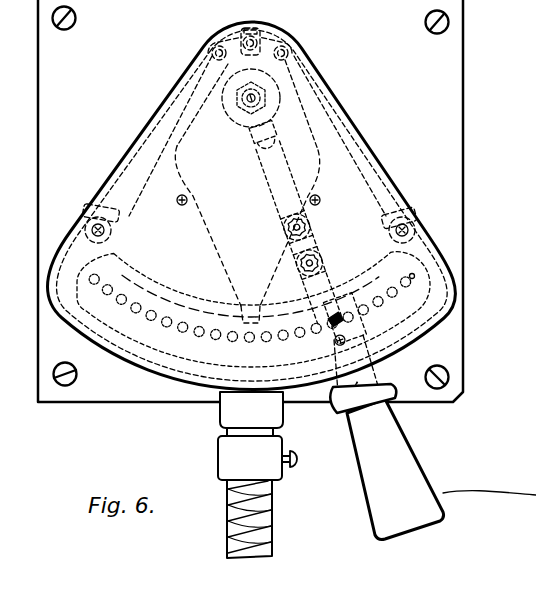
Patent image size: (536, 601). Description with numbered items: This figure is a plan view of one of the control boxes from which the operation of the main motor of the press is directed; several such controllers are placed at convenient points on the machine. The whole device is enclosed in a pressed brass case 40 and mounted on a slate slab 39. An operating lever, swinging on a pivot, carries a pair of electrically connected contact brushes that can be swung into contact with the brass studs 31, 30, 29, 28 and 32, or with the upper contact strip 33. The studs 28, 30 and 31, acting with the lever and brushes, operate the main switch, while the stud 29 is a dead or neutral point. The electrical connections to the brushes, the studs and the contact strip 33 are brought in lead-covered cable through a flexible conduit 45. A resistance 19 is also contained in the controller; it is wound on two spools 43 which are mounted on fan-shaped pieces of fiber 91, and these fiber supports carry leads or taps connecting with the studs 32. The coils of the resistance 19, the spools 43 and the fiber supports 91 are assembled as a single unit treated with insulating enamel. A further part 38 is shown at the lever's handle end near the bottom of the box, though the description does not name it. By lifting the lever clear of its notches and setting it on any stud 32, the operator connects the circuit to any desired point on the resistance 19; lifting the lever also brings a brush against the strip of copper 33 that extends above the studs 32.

The resistance 19 is at (150, 126).
The brass stud 28 is at (390, 322).
The brass stud 29 is at (363, 325).
The brass stud 30 is at (380, 305).
The brass stud 31 is at (412, 279).
The studs 32 is at (214, 335).
The contact strip 33 is at (213, 347).
The handle flange 38 is at (327, 405).
The slate slab 39 is at (465, 42).
The pressed brass case 40 is at (527, 69).
The spools 43 is at (190, 82).
The flexible conduit 45 is at (273, 512).
The fan shaped pieces of fiber 91 is at (190, 183).